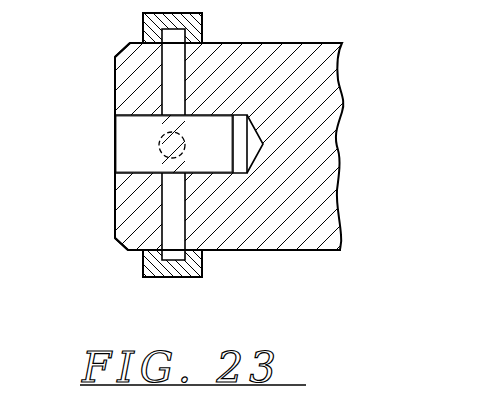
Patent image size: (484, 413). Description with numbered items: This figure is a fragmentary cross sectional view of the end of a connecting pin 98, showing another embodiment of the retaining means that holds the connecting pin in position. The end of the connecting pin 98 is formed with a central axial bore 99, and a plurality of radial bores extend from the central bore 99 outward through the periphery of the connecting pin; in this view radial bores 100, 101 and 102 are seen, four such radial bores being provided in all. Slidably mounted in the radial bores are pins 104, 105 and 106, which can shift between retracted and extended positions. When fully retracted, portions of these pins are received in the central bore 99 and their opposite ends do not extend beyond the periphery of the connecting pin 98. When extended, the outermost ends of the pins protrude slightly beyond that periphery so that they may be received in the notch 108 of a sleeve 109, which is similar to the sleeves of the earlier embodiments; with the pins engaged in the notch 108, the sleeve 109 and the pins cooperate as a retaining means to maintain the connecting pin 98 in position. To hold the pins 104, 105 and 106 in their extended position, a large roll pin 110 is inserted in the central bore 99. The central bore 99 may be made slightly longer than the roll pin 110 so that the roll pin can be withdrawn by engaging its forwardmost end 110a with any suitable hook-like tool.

The connecting pin 98 is at (327, 170).
The central axial bore 99 is at (128, 117).
The radial bore 100 is at (127, 68).
The radial bore 101 is at (159, 147).
The radial bore 102 is at (113, 236).
The pin 104 is at (178, 68).
The pin 105 is at (290, 60).
The pin 106 is at (213, 230).
The notch 108 is at (165, 277).
The sleeve 109 is at (143, 267).
The roll pin 110 is at (120, 170).
The forwardmost end 110a is at (313, 104).